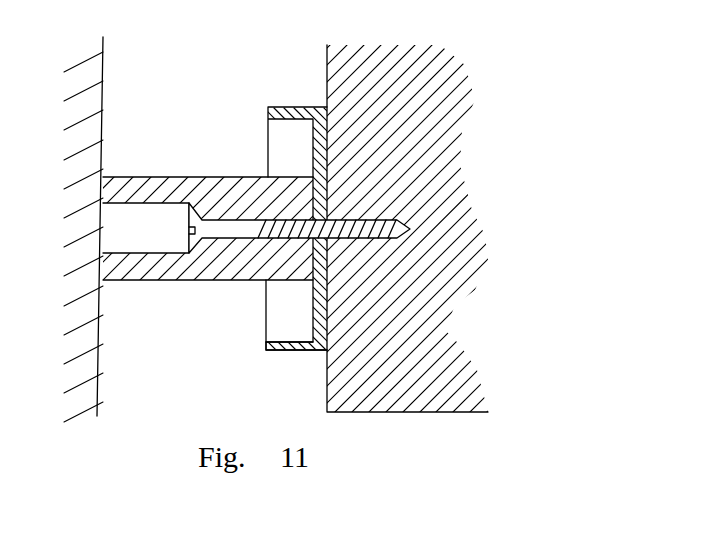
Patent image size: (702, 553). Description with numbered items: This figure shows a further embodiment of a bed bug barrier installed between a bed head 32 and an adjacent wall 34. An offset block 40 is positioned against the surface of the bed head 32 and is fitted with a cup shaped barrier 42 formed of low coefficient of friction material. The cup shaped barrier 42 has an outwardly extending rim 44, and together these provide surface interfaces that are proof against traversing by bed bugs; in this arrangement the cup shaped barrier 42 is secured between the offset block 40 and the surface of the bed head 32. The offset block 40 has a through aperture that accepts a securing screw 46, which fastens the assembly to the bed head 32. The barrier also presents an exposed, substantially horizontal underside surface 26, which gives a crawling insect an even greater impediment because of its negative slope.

The clip 26 is at (292, 127).
The wall 32 is at (351, 228).
The mounting wall 34 is at (103, 80).
The bracket 40 is at (221, 93).
The recess 42 is at (240, 318).
The lower leg of clip 44 is at (278, 351).
The screw 46 is at (220, 223).